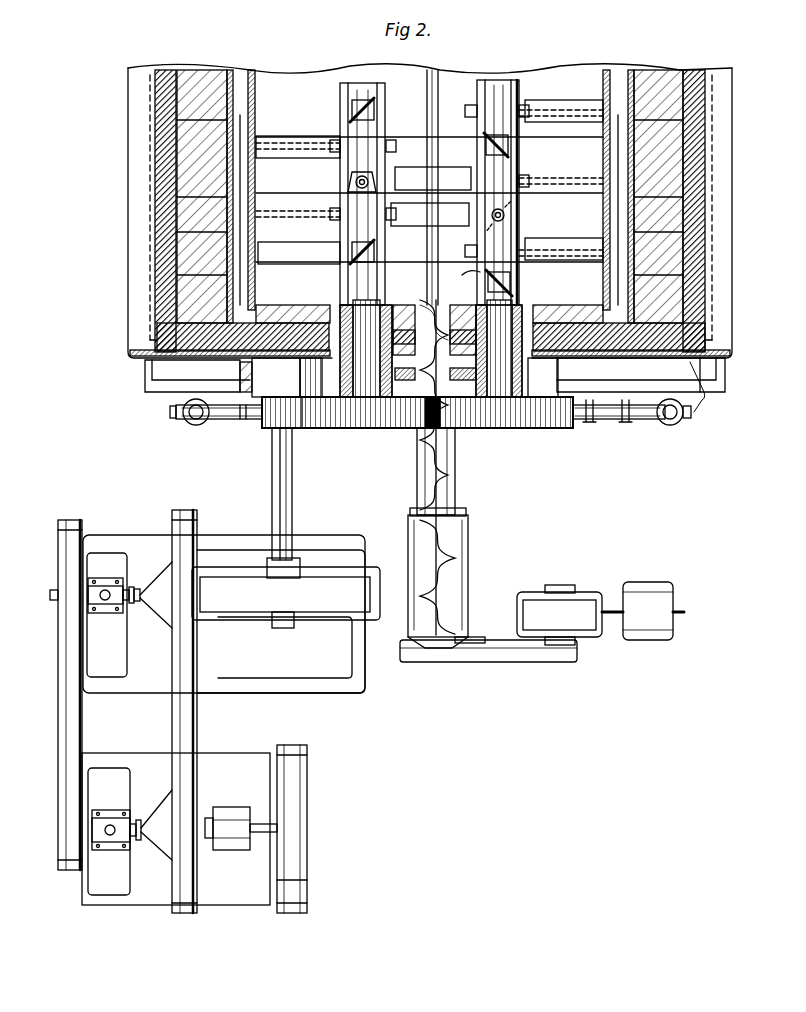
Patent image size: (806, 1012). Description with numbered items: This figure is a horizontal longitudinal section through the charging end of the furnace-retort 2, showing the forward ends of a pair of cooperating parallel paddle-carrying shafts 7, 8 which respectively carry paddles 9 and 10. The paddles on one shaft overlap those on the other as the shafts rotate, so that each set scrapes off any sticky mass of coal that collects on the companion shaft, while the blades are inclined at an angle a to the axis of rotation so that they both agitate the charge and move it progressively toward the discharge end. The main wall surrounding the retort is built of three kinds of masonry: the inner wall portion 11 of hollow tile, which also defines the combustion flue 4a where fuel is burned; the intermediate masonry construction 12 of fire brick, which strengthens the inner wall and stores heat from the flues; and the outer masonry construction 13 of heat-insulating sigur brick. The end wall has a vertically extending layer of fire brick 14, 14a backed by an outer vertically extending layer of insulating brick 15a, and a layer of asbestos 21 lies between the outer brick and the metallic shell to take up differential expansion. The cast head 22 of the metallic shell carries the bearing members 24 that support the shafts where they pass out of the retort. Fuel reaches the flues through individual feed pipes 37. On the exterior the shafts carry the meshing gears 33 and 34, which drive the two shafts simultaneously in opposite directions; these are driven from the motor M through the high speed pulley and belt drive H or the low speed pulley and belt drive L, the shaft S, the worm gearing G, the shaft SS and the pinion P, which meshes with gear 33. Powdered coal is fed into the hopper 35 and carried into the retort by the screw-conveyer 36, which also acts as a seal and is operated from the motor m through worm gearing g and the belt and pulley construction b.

The furnace-retort 2 is at (700, 277).
The combustion flue 4a is at (160, 270).
The paddle-carrying shaft 7 is at (520, 155).
The paddle-carrying shaft 8 is at (356, 168).
The paddles 9 is at (588, 118).
The paddles 10 is at (370, 110).
The inner wall portion 11 is at (232, 128).
The intermediate masonry construction 12 is at (200, 165).
The outer masonry construction 13 is at (176, 225).
The vertically extending layer of clay brick 14 is at (588, 283).
The vertically extending layer of clay brick 14a is at (412, 428).
The outer vertically extending layer of heat insulating brick 15a is at (655, 420).
The asbestos layer 21 is at (200, 372).
The head of the metallic shell 22 is at (704, 384).
The bearing member 24 is at (318, 445).
The gear 33 is at (345, 428).
The gear 34 is at (530, 428).
The hopper 35 is at (465, 560).
The screw-conveyer 36 is at (458, 460).
The feed pipe 37 is at (240, 426).
The angle of paddle blade slope a is at (467, 282).
The belt and pulley construction b is at (508, 662).
The worm gearing g is at (570, 615).
The motor m is at (653, 611).
The worm gearing G is at (286, 593).
The high speed pulley and belt drive H is at (200, 718).
The low speed pulley and belt drive L is at (85, 718).
The motor M is at (310, 800).
The pinion P is at (266, 428).
The shaft S is at (145, 595).
The shaft SS is at (295, 518).